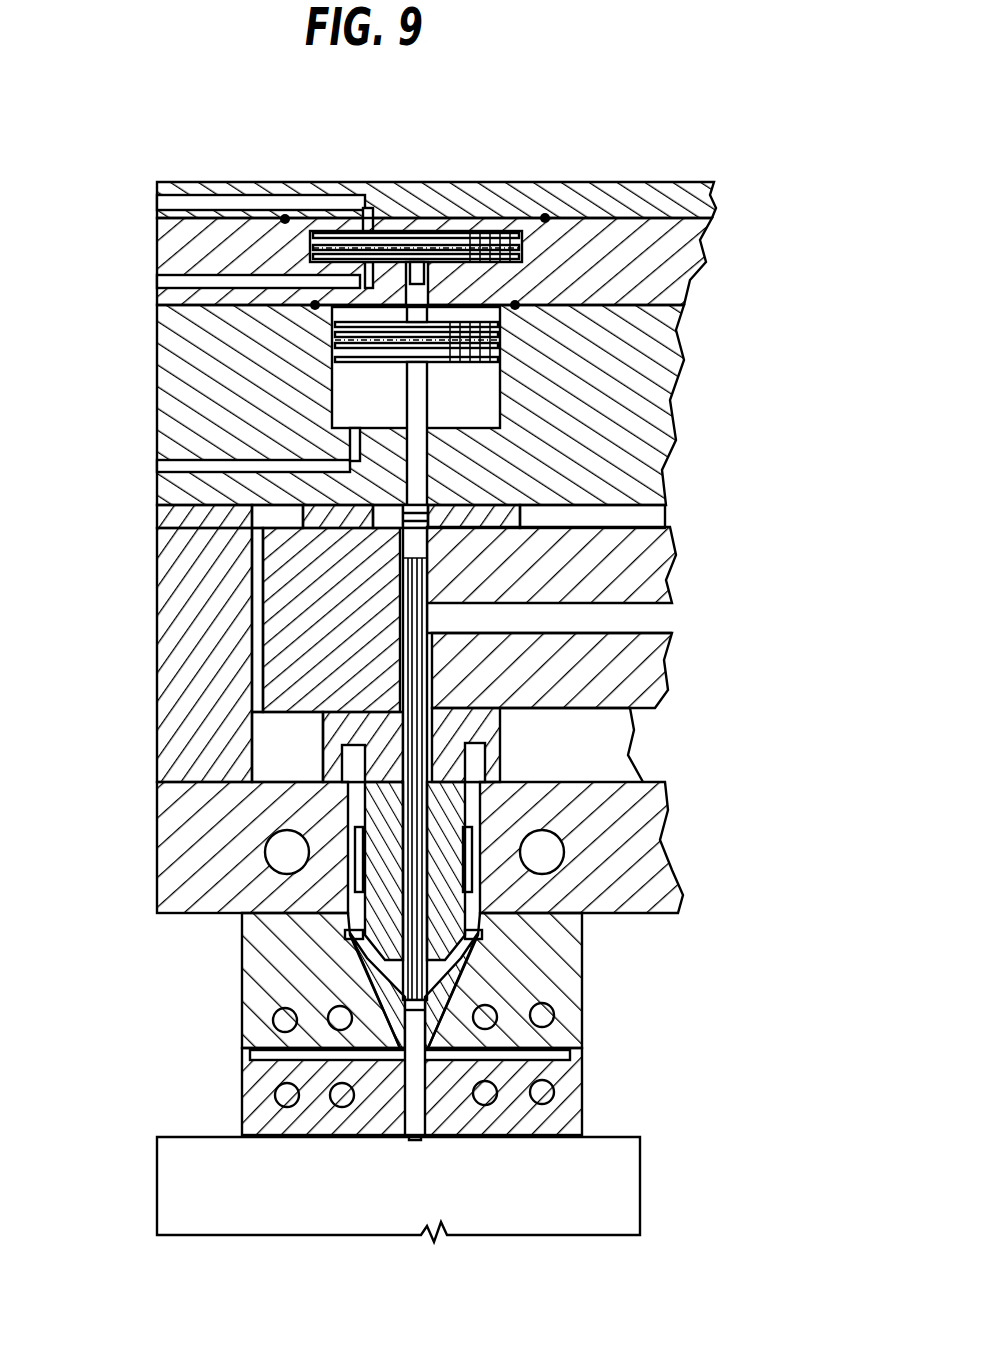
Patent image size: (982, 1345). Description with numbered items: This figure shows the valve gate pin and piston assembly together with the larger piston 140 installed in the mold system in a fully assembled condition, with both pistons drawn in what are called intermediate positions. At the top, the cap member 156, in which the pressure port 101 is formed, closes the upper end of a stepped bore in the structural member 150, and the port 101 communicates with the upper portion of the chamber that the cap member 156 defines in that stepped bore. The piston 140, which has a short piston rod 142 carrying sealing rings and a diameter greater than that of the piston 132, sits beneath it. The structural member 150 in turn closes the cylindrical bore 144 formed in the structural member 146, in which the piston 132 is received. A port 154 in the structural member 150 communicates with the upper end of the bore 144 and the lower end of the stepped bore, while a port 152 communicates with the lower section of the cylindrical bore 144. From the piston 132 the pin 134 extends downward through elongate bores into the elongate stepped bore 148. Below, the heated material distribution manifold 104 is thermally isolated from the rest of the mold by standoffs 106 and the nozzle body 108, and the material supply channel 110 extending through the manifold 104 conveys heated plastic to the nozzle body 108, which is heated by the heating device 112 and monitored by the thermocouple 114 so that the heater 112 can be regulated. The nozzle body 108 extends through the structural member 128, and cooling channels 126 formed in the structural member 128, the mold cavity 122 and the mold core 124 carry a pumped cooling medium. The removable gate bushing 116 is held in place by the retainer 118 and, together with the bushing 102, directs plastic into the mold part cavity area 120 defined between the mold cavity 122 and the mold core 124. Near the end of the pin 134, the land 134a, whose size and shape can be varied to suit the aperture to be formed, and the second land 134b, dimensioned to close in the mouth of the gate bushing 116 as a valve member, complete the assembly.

The pressure port 101 is at (165, 209).
The bushing 102 is at (410, 1138).
The heated material distribution manifold 104 is at (655, 578).
The standoffs 106 is at (315, 522).
The nozzle body 108 is at (337, 740).
The material supply channel 110 is at (672, 625).
The heating device 112 is at (357, 847).
The thermocouple 114 is at (358, 913).
The removable gate bushing 116 is at (470, 1000).
The retainer 118 is at (347, 935).
The mold part cavity area 120 is at (295, 1056).
The mold cavity 122 is at (585, 1000).
The mold core 124 is at (582, 1092).
The cooling channels 126 is at (555, 856).
The structural member 128 is at (655, 820).
The piston 132 is at (443, 362).
The pin 134 is at (412, 400).
The land 134a is at (420, 1060).
The second land 134b is at (413, 1027).
The piston 140 is at (484, 240).
The piston rod 142 is at (415, 280).
The cylindrical bore 144 is at (516, 410).
The structural member 146 is at (650, 468).
The elongate stepped bore 148 is at (413, 692).
The structural member 150 is at (655, 283).
The port 152 is at (165, 462).
The port 154 is at (165, 293).
The cap member 156 is at (686, 200).